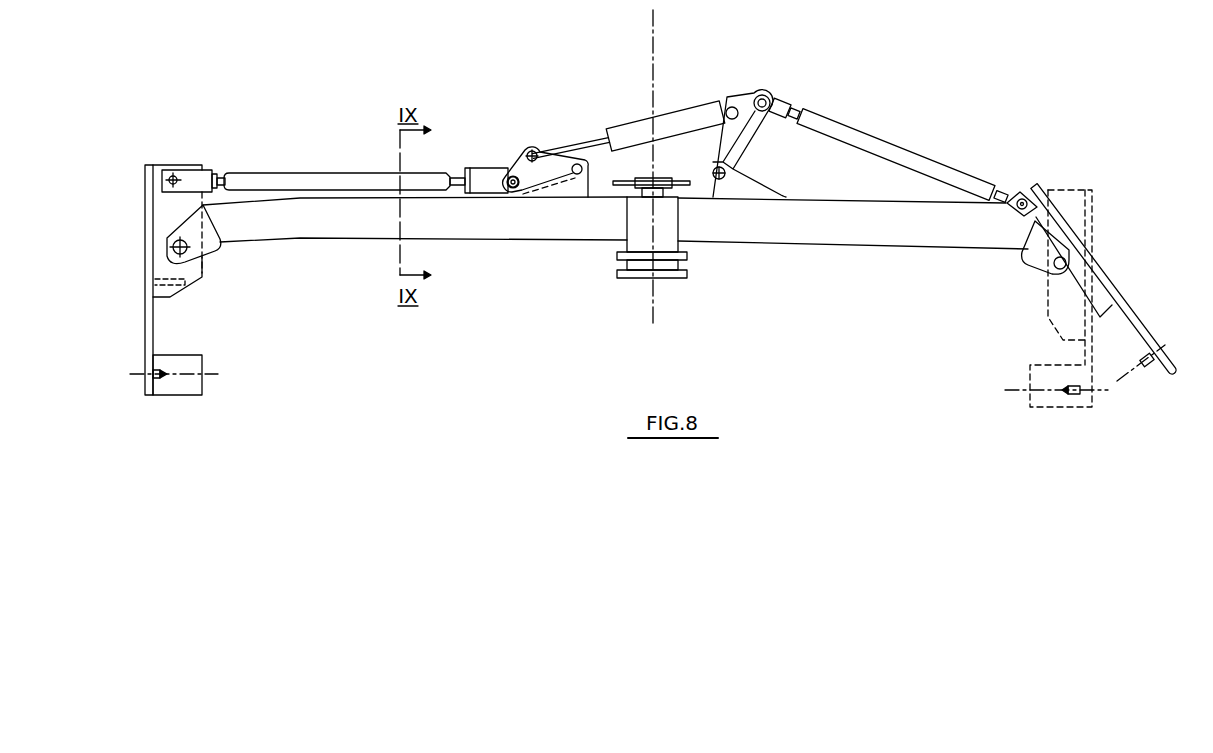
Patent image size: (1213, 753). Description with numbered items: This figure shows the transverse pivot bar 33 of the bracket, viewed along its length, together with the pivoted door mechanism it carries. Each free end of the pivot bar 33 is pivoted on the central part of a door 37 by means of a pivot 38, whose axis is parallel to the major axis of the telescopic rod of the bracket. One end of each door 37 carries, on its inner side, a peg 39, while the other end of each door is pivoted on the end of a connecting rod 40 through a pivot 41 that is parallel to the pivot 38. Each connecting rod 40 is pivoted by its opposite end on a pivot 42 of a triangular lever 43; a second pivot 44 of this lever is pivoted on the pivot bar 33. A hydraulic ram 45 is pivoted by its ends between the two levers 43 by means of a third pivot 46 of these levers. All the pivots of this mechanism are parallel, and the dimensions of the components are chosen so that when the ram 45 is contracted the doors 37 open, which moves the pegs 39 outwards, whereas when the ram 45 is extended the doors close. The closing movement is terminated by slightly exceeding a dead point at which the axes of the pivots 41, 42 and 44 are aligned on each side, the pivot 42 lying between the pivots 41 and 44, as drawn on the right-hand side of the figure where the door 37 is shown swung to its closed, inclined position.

The pivot bar 33 is at (834, 228).
The door 37 is at (145, 270).
The pivot 38 is at (167, 245).
The peg 39 is at (160, 380).
The connecting rod 40 is at (300, 188).
The pivot 41 is at (174, 177).
The pivot 42 is at (513, 190).
The triangular lever 43 is at (514, 176).
The second pivot 44 is at (590, 167).
The hydraulic ram 45 is at (630, 122).
The third pivot 46 is at (534, 150).